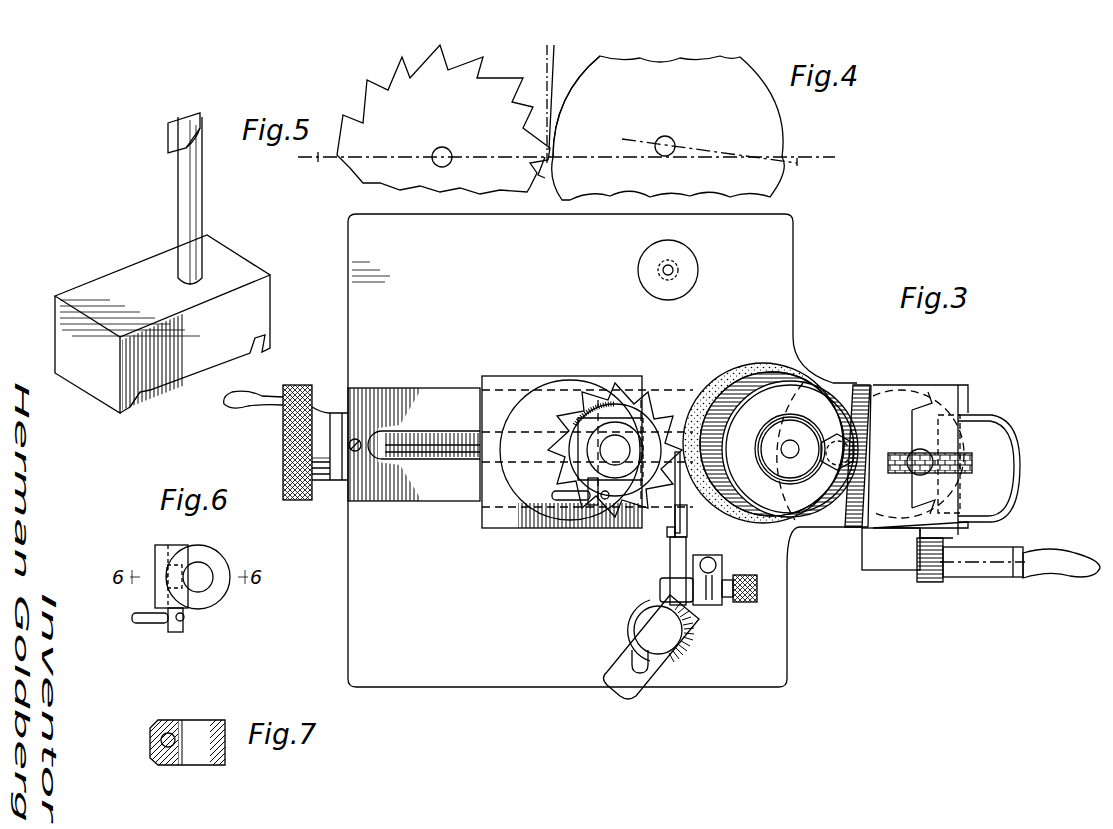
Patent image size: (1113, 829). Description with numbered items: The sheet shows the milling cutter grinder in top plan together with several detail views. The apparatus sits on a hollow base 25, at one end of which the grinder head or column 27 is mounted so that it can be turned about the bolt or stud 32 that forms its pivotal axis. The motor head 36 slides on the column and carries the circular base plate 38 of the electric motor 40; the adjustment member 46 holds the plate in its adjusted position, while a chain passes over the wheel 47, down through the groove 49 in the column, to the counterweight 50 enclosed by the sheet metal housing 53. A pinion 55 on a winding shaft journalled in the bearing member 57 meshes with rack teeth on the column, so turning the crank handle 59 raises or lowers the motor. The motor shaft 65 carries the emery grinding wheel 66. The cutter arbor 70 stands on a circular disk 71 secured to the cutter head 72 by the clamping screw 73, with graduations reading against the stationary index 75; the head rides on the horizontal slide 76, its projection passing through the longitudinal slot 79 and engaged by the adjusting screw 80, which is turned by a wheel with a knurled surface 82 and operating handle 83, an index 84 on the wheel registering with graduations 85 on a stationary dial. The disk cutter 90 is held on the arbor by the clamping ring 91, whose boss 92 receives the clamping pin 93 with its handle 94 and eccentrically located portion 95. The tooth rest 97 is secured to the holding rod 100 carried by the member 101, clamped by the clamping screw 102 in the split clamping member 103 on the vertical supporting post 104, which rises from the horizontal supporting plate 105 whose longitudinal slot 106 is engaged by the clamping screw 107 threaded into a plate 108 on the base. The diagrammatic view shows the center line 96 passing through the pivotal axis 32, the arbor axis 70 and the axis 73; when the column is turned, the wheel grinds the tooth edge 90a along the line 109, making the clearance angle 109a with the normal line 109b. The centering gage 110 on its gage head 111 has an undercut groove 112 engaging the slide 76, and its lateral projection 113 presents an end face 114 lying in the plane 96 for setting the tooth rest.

In FIG. 3, the hollow base 25 is at (782, 268).
In FIG. 3, the grinder head or column 27 is at (957, 395).
In FIG. 4, the bolt or stud 32 is at (800, 162).
In FIG. 3, the bolt or stud 32 is at (830, 470).
In FIG. 3, the motor head 36 is at (890, 392).
In FIG. 3, the circular base plate 38 is at (862, 385).
In FIG. 3, the electric motor 40 is at (795, 392).
In FIG. 3, the flexible sprocket chain 46 is at (975, 465).
In FIG. 3, the wheel 47 is at (920, 450).
In FIG. 3, the groove 49 is at (957, 455).
In FIG. 3, the counterweight 50 is at (995, 490).
In FIG. 3, the sheet metal housing 53 is at (1014, 430).
In FIG. 3, the pinion 55 is at (930, 582).
In FIG. 3, the bearing member 57 is at (883, 565).
In FIG. 3, the crank handle 59 is at (1018, 578).
In FIG. 4, the motor shaft 65 is at (668, 143).
In FIG. 4, the emery grinding wheel 66 is at (765, 127).
In FIG. 3, the emery grinding wheel 66 is at (742, 372).
In FIG. 4, the cutter arbor 70 is at (440, 152).
In FIG. 3, the cutter arbor 70 is at (615, 445).
In FIG. 3, the circular disk 71 is at (556, 385).
In FIG. 3, the cutter head 72 is at (497, 383).
In FIG. 4, the clamping screw 73 is at (318, 158).
In FIG. 3, the stationary index 75 is at (566, 520).
In FIG. 3, the horizontal slide 76 is at (372, 395).
In FIG. 3, the longitudinal slot 79 is at (432, 430).
In FIG. 3, the adjusting screw 80 is at (422, 460).
In FIG. 3, the knurled surface 82 is at (298, 385).
In FIG. 3, the operating handle 83 is at (235, 403).
In FIG. 3, the index 84 is at (330, 413).
In FIG. 3, the graduations 85 is at (340, 483).
In FIG. 3, the disk cutter 90 is at (655, 400).
In FIG. 4, the cutting edge of the tooth 90a is at (545, 170).
In FIG. 3, the clamping ring 91 is at (640, 445).
In FIG. 6, the clamping ring 91 is at (222, 562).
In FIG. 7, the clamping ring 91 is at (215, 720).
In FIG. 3, the boss 92 is at (580, 432).
In FIG. 6, the boss 92 is at (165, 548).
In FIG. 7, the boss 92 is at (155, 722).
In FIG. 6, the clamping pin 93 is at (185, 628).
In FIG. 3, the handle 94 is at (553, 493).
In FIG. 6, the handle 94 is at (143, 622).
In FIG. 6, the eccentrically located portion 95 is at (162, 585).
In FIG. 7, the eccentrically located portion 95 is at (150, 743).
In FIG. 4, the center line 96 is at (720, 160).
In FIG. 3, the tooth rest 97 is at (673, 470).
In FIG. 3, the holding rod 100 is at (672, 555).
In FIG. 3, the member 101 is at (660, 588).
In FIG. 3, the clamping screw 102 is at (745, 575).
In FIG. 3, the split clamping member 103 is at (718, 606).
In FIG. 3, the vertical supporting post 104 is at (712, 558).
In FIG. 3, the horizontal supporting plate 105 is at (620, 668).
In FIG. 3, the longitudinal slot 106 is at (648, 668).
In FIG. 3, the clamping screw 107 is at (690, 636).
In FIG. 3, the plate 108 is at (690, 264).
In FIG. 4, the line 109 is at (546, 66).
In FIG. 4, the angle 109a is at (552, 96).
In FIG. 4, the line 109b is at (556, 75).
In FIG. 5, the centering gage 110 is at (202, 212).
In FIG. 5, the gage head 111 is at (240, 272).
In FIG. 5, the undercut groove 112 is at (140, 400).
In FIG. 5, the lateral projection 113 is at (190, 125).
In FIG. 5, the end face 114 is at (168, 126).